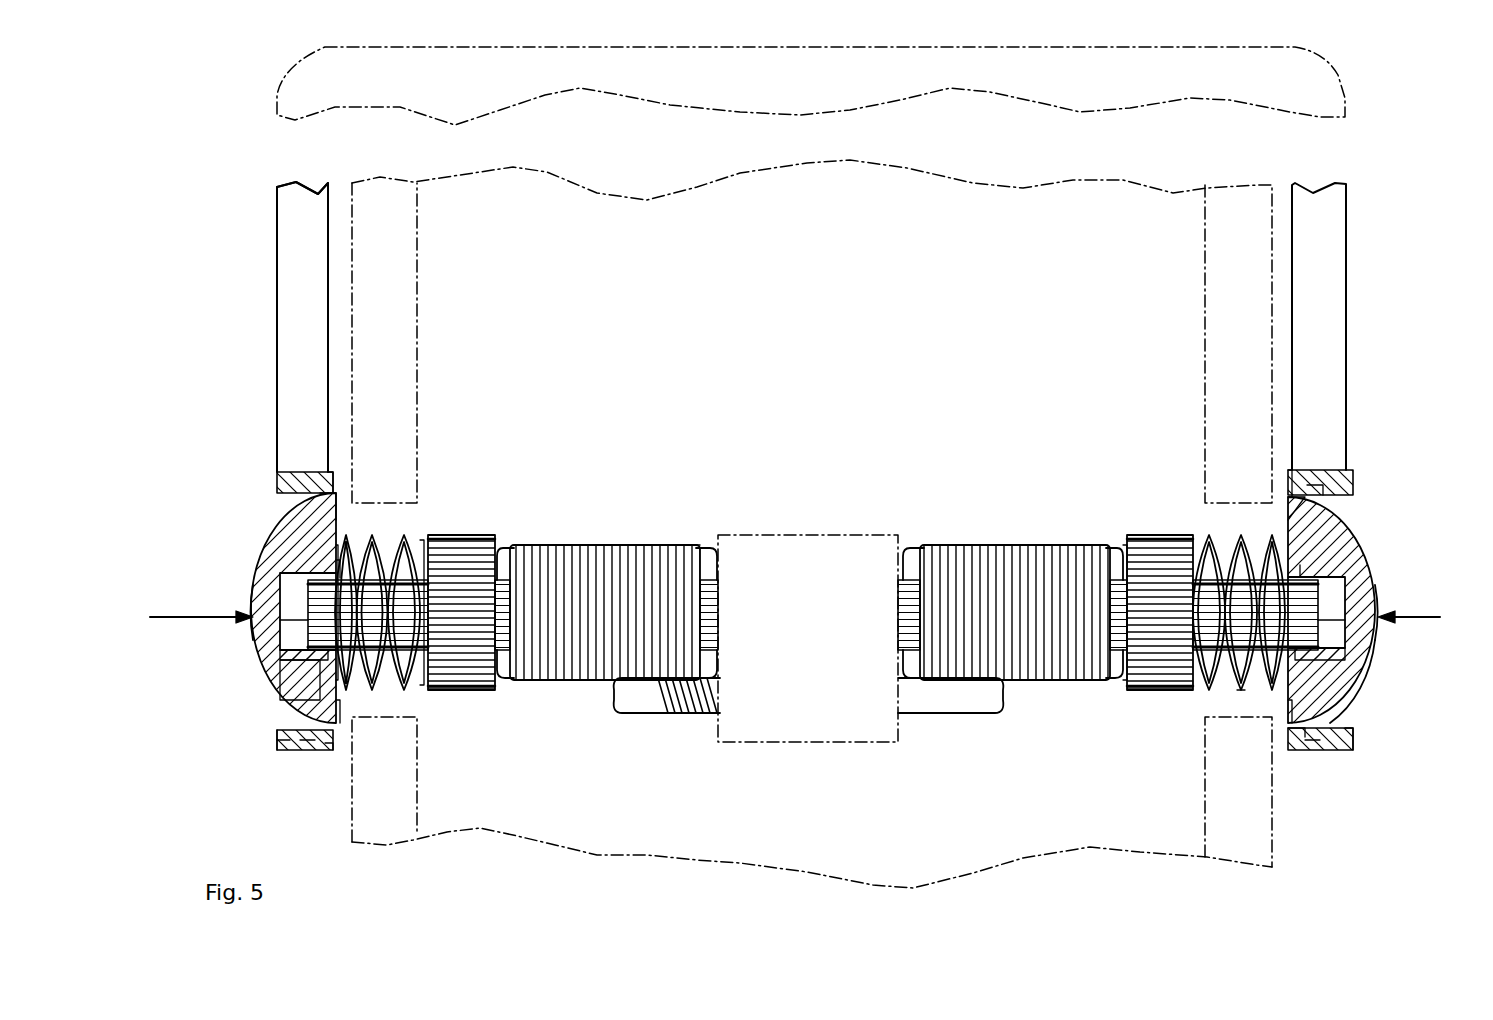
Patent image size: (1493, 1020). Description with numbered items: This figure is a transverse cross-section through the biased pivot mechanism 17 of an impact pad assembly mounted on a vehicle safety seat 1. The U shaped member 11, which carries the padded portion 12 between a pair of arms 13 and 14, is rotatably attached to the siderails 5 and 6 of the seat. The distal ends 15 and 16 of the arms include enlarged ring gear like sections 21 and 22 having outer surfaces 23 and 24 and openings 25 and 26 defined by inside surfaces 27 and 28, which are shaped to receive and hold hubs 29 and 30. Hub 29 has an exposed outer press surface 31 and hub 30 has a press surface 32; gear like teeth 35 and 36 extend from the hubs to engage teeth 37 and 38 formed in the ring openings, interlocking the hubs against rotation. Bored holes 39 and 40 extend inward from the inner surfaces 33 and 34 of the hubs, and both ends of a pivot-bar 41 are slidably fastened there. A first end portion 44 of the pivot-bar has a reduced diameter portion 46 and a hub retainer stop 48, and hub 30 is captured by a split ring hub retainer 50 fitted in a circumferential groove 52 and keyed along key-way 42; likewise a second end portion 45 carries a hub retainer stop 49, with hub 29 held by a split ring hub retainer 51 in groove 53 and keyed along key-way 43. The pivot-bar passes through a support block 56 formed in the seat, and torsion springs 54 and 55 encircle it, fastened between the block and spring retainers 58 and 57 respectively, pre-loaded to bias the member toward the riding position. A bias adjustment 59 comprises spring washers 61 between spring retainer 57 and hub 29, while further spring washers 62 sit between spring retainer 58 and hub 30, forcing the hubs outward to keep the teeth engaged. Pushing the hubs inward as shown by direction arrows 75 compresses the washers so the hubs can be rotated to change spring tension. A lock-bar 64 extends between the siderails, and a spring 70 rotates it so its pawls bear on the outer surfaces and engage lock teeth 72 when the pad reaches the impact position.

The vehicle safety seat 1 is at (562, 826).
The siderail 5 is at (1203, 282).
The siderail 6 is at (415, 272).
The U shaped member 11 is at (288, 312).
The padded portion 12 is at (302, 85).
The arm 13 is at (1340, 262).
The arm 14 is at (295, 258).
The distal end 15 is at (1373, 687).
The distal end 16 is at (260, 733).
The biased pivot mechanism 17 is at (645, 545).
The enlarged ring gear like section 21 is at (1352, 752).
The enlarged ring gear like section 22 is at (277, 750).
The outer surface 23 is at (1305, 752).
The outer surface 24 is at (305, 757).
The opening 25 is at (1383, 580).
The opening 26 is at (253, 603).
The inside surface 27 is at (1347, 495).
The inside surface 28 is at (283, 497).
The hub 29 is at (1357, 730).
The hub 30 is at (290, 722).
The outer surface 31 is at (1377, 597).
The press surface 32 is at (258, 582).
The inner surface 33 is at (1287, 713).
The inner surface 34 is at (385, 683).
The gear like teeth 35 is at (1287, 492).
The gear like teeth 36 is at (338, 495).
The teeth 37 is at (1292, 470).
The teeth 38 is at (335, 468).
The bored hole 39 is at (1343, 622).
The bored hole 40 is at (285, 628).
The pivot-bar 41 is at (712, 600).
The key-way 42 is at (278, 687).
The key-way 43 is at (1330, 657).
The first end portion 44 is at (487, 553).
The second end portion 45 is at (1162, 548).
The reduced diameter portion 46 is at (398, 550).
The hub retainer stop 48 is at (270, 650).
The hub retainer stop 49 is at (1315, 578).
The split ring hub retainer 50 is at (323, 567).
The split ring hub retainer 51 is at (1305, 572).
The circumferential groove 52 is at (330, 560).
The circumferential groove 53 is at (1323, 472).
The torsion spring 54 is at (588, 562).
The torsion spring 55 is at (1000, 555).
The support block 56 is at (793, 540).
The spring retainer 57 is at (1122, 545).
The spring retainer 58 is at (440, 580).
The bias adjustment 59 is at (1237, 700).
The spring washers 61 is at (1210, 560).
The spring washers 62 is at (400, 575).
The lock-bar 64 is at (635, 715).
The spring 70 is at (700, 714).
The lock teeth 72 is at (333, 763).
The direction arrows 75 is at (799, 619).